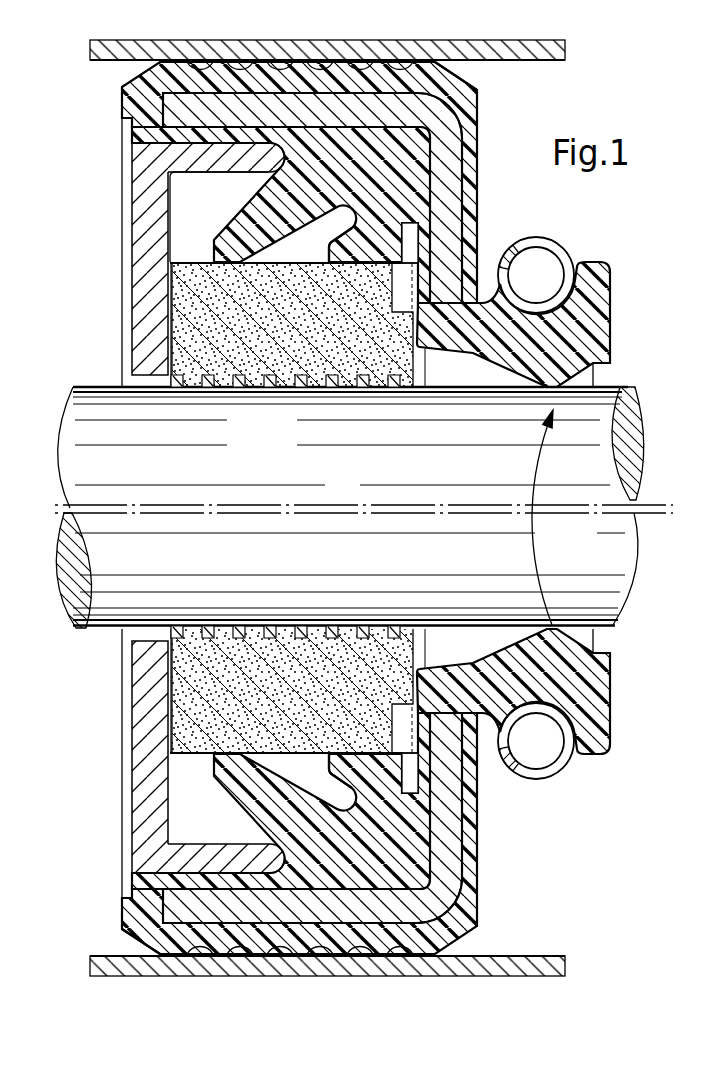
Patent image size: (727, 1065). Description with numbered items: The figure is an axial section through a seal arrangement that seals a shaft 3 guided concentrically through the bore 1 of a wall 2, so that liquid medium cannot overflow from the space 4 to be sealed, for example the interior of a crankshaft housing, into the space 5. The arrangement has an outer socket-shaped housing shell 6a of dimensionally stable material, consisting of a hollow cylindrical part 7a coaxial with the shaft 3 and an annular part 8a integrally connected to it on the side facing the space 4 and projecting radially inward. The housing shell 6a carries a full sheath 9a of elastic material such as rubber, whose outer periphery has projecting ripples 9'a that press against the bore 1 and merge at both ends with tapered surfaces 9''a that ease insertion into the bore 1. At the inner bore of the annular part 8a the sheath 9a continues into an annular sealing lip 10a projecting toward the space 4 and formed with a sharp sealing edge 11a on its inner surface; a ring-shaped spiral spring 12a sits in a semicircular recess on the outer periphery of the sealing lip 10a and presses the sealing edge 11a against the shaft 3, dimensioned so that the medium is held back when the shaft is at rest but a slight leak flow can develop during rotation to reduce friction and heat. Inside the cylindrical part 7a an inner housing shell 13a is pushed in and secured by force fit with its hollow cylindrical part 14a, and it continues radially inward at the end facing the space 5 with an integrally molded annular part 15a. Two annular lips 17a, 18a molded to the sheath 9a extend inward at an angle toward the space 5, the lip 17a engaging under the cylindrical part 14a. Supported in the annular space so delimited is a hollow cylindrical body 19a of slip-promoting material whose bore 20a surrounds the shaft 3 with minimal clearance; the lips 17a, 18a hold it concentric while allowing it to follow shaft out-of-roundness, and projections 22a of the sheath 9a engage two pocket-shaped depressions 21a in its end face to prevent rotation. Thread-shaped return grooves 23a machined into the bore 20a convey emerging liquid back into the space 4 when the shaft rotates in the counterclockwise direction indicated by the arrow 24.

The bore 1 is at (542, 63).
The wall 2 is at (483, 50).
The shaft 3 is at (355, 501).
The space 4 is at (545, 857).
The space 5 is at (105, 683).
The outer socket-shaped housing shell 6a is at (440, 126).
The hollow cylindrical part 7a is at (165, 113).
The annular part 8a is at (443, 793).
The sheath 9a is at (397, 67).
The projecting ripples 9'a is at (240, 485).
The tapered surfaces 9''a is at (298, 508).
The annular sealing lip 10a is at (573, 327).
The sealing edge 11a is at (593, 660).
The spiral spring 12a is at (504, 248).
The inner housing shell 13a is at (158, 167).
The hollow cylindrical part 14a is at (242, 165).
The annular part 15a is at (150, 305).
The annular lip 17a is at (217, 777).
The annular lip 18a is at (327, 247).
The hollow cylindrical body 19a is at (178, 337).
The bore 20a is at (228, 382).
The pocket-shaped depressions 21a is at (385, 712).
The projections 22a is at (392, 301).
The thread-shaped return grooves 23a is at (213, 364).
The arrow 24 is at (533, 548).